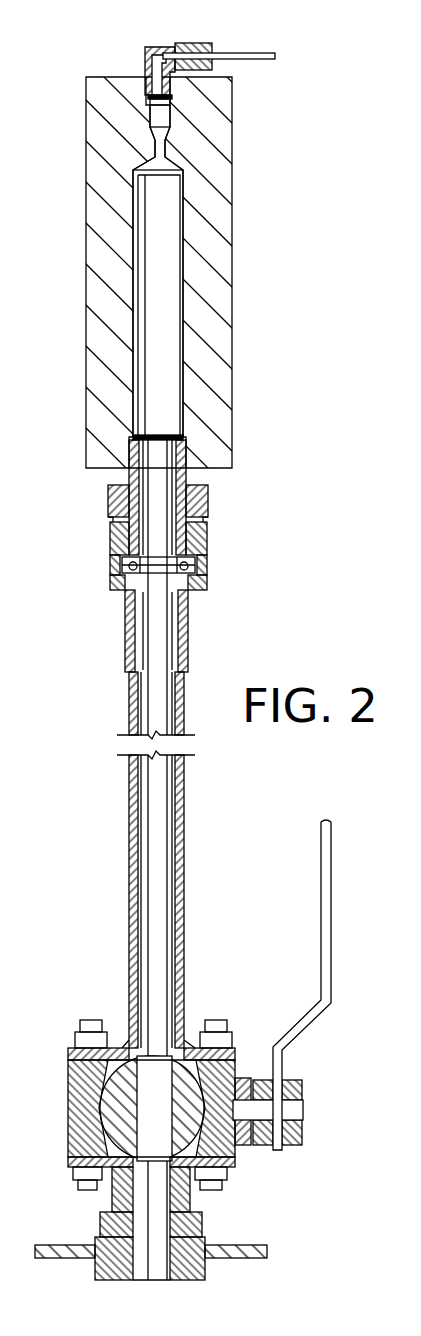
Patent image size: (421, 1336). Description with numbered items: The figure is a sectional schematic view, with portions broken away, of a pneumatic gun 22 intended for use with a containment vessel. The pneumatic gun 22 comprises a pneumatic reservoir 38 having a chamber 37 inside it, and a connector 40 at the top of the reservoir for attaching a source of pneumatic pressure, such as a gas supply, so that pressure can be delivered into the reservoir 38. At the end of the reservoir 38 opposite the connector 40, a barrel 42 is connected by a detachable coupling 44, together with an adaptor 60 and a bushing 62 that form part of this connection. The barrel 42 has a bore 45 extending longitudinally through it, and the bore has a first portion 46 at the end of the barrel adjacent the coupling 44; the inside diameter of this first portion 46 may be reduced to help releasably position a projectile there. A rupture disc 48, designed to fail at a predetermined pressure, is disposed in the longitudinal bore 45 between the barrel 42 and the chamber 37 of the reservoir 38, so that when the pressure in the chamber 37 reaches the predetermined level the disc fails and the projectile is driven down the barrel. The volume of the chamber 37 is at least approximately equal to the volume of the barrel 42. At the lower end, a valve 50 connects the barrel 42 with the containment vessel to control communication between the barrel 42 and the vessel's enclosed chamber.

The pneumatic gun 22 is at (252, 575).
The chamber 37 is at (180, 294).
The pneumatic reservoir 38 is at (177, 263).
The connector 40 is at (162, 45).
The barrel 42 is at (132, 703).
The detachable coupling 44 is at (207, 549).
The bore 45 is at (166, 823).
The first portion 46 is at (168, 617).
The rupture disc 48 is at (158, 586).
The valve 50 is at (302, 1087).
The adaptor 60 is at (208, 500).
The bushing 62 is at (130, 627).